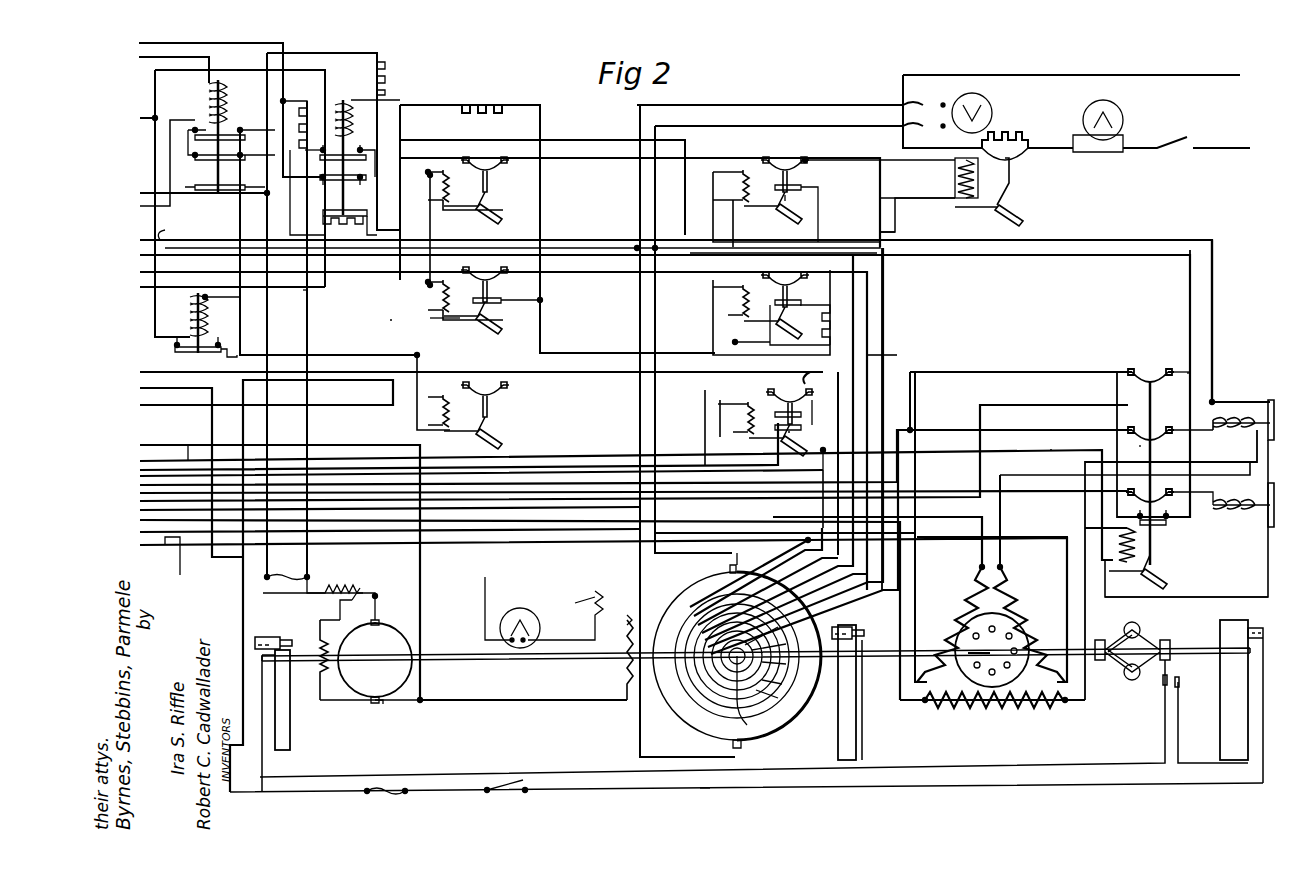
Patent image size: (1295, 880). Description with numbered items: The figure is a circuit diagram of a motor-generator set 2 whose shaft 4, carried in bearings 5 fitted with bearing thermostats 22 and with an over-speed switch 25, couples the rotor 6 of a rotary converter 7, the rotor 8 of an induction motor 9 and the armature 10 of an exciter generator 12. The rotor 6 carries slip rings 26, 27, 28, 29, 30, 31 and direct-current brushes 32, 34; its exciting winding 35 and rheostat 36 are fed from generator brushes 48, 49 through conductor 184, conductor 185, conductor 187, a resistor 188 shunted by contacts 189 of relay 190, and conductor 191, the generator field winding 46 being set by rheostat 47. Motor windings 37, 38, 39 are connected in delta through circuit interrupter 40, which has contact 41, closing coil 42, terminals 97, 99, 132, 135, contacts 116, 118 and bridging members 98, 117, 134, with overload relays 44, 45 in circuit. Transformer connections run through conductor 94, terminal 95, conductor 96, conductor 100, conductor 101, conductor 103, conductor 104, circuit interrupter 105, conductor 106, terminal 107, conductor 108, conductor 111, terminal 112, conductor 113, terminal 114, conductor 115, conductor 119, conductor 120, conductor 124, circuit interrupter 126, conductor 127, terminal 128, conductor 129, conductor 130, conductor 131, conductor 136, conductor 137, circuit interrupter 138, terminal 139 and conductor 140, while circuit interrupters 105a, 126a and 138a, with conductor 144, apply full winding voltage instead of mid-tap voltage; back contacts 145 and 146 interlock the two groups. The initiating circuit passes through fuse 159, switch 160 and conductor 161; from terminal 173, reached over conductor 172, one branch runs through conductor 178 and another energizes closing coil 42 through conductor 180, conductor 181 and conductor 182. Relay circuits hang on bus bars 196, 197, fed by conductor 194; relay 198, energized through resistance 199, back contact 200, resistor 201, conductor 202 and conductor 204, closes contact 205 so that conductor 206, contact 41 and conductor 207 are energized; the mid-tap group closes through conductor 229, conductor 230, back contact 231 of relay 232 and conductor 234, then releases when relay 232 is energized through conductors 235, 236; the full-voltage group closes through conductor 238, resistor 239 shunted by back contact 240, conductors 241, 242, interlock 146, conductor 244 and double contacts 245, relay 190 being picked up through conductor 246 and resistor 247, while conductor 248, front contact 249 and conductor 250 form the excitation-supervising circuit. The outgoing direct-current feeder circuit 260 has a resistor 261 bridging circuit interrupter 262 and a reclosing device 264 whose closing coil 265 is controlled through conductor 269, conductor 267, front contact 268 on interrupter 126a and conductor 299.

The motor-generator set 2 is at (814, 500).
The shaft 4 is at (540, 660).
The bearings 5 is at (298, 752).
The rotor of the rotary converter 6 is at (684, 684).
The rotary converter 7 is at (777, 431).
The rotor of the induction motor 8 is at (1012, 664).
The induction motor 9 is at (992, 638).
The armature of the generator 10 is at (406, 648).
The generator 12 is at (339, 648).
The bearing thermostat 22 is at (769, 699).
The over-speed switch 25 is at (1137, 665).
The slip ring 26 is at (737, 665).
The slip ring 27 is at (746, 660).
The slip ring 28 is at (754, 656).
The slip ring 29 is at (761, 656).
The slip ring 30 is at (767, 652).
The slip ring 31 is at (769, 637).
The brush 32 is at (737, 566).
The brush 34 is at (740, 748).
The exciting winding 35 is at (625, 674).
The rheostat 36 is at (600, 605).
The winding 37 is at (1035, 604).
The winding 38 is at (955, 604).
The winding 39 is at (985, 710).
The circuit interrupter 40 is at (1155, 556).
The contact 41 is at (1165, 524).
The closing coil 42 is at (1118, 551).
The overload relay 44 is at (1278, 483).
The overload relay 45 is at (1144, 494).
The field winding 46 is at (322, 644).
The controlling rheostat 47 is at (323, 595).
The brush 48 is at (378, 615).
The brush 49 is at (375, 703).
The conductor 94 is at (617, 471).
The terminal 95 is at (912, 432).
The conductor 96 is at (1042, 428).
The terminal 97 is at (1149, 426).
The bridging member 98 is at (1140, 452).
The terminal 99 is at (1186, 422).
The conductor 100 is at (1171, 565).
The conductor 101 is at (900, 702).
The conductor 103 is at (160, 576).
The conductor 104 is at (485, 427).
The circuit interrupter 105 is at (468, 254).
The circuit interrupter 105a is at (798, 286).
The conductor 106 is at (540, 278).
The terminal 107 is at (767, 260).
The conductor 108 is at (870, 325).
The conductor 111 is at (615, 453).
The terminal 112 is at (1240, 394).
The conductor 113 is at (1219, 326).
The terminal 114 is at (1207, 355).
The conductor 115 is at (1191, 375).
The contact 116 is at (1175, 357).
The bridging member 117 is at (1134, 470).
The contact member 118 is at (1144, 362).
The conductor 119 is at (1011, 375).
The conductor 120 is at (981, 554).
The conductor 124 is at (248, 586).
The circuit interrupter 126 is at (468, 187).
The circuit interrupter 126a is at (798, 167).
The conductor 127 is at (694, 159).
The terminal 128 is at (764, 160).
The conductor 129 is at (885, 302).
The conductor 130 is at (163, 556).
The conductor 131 is at (1018, 521).
The terminal 132 is at (1187, 536).
The bridging member 134 is at (1185, 490).
The terminal 135 is at (657, 488).
The conductor 136 is at (1010, 503).
The conductor 137 is at (744, 723).
The circuit interrupter 138 is at (468, 413).
The circuit interrupter 138a is at (759, 419).
The terminal 139 is at (833, 406).
The conductor 140 is at (838, 493).
The conductor 144 is at (818, 368).
The back contact member 145 is at (807, 437).
The back contact 146 is at (508, 296).
The fuse 159 is at (380, 796).
The manually-operated switch 160 is at (492, 800).
The conductor 161 is at (751, 791).
The conductor 172 is at (608, 501).
The terminal 173 is at (837, 446).
The conductor 178 is at (463, 449).
The conductor 180 is at (1056, 450).
The conductor 181 is at (1213, 595).
The conductor 182 is at (1247, 411).
The conductor 184 is at (456, 701).
The conductor 185 is at (490, 575).
The conductor 187 is at (139, 43).
The resistor 188 is at (315, 100).
The contacts 189 is at (350, 175).
The relay 190 is at (366, 149).
The conductor 191 is at (303, 315).
The conductor 194 is at (375, 438).
The bus bar 196 is at (200, 446).
The bus bar 197 is at (144, 193).
The relay 198 is at (199, 323).
The resistance 199 is at (404, 78).
The back contact 200 is at (333, 192).
The resistor 201 is at (338, 207).
The conductor 202 is at (324, 296).
The conductor 204 is at (146, 118).
The contact 205 is at (208, 346).
The conductor 206 is at (206, 359).
The conductor 207 is at (667, 391).
The conductor 229 is at (148, 287).
The conductor 230 is at (357, 356).
The back contact 231 is at (225, 178).
The relay 232 is at (208, 102).
The conductor 234 is at (176, 232).
The conductor 235 is at (148, 57).
The conductor 236 is at (149, 168).
The conductor 238 is at (752, 332).
The resistor 239 is at (817, 325).
The back contact 240 is at (798, 313).
The conductor 241 is at (610, 340).
The conductor 242 is at (540, 306).
The conductor 244 is at (373, 322).
The double contacts 245 is at (212, 144).
The conductor 246 is at (258, 59).
The resistor 247 is at (557, 219).
The conductor 248 is at (598, 141).
The front contact 249 is at (810, 418).
The conductor 250 is at (628, 383).
The outgoing direct-current feeder circuit 260 is at (1215, 95).
The resistor 261 is at (1030, 137).
The circuit interrupter 262 is at (1025, 160).
The reclosing device 264 is at (955, 172).
The closing coil 265 is at (917, 187).
The conductor 267 is at (686, 316).
The front contact 268 is at (803, 204).
The conductor 269 is at (160, 240).
The conductor 299 is at (895, 225).